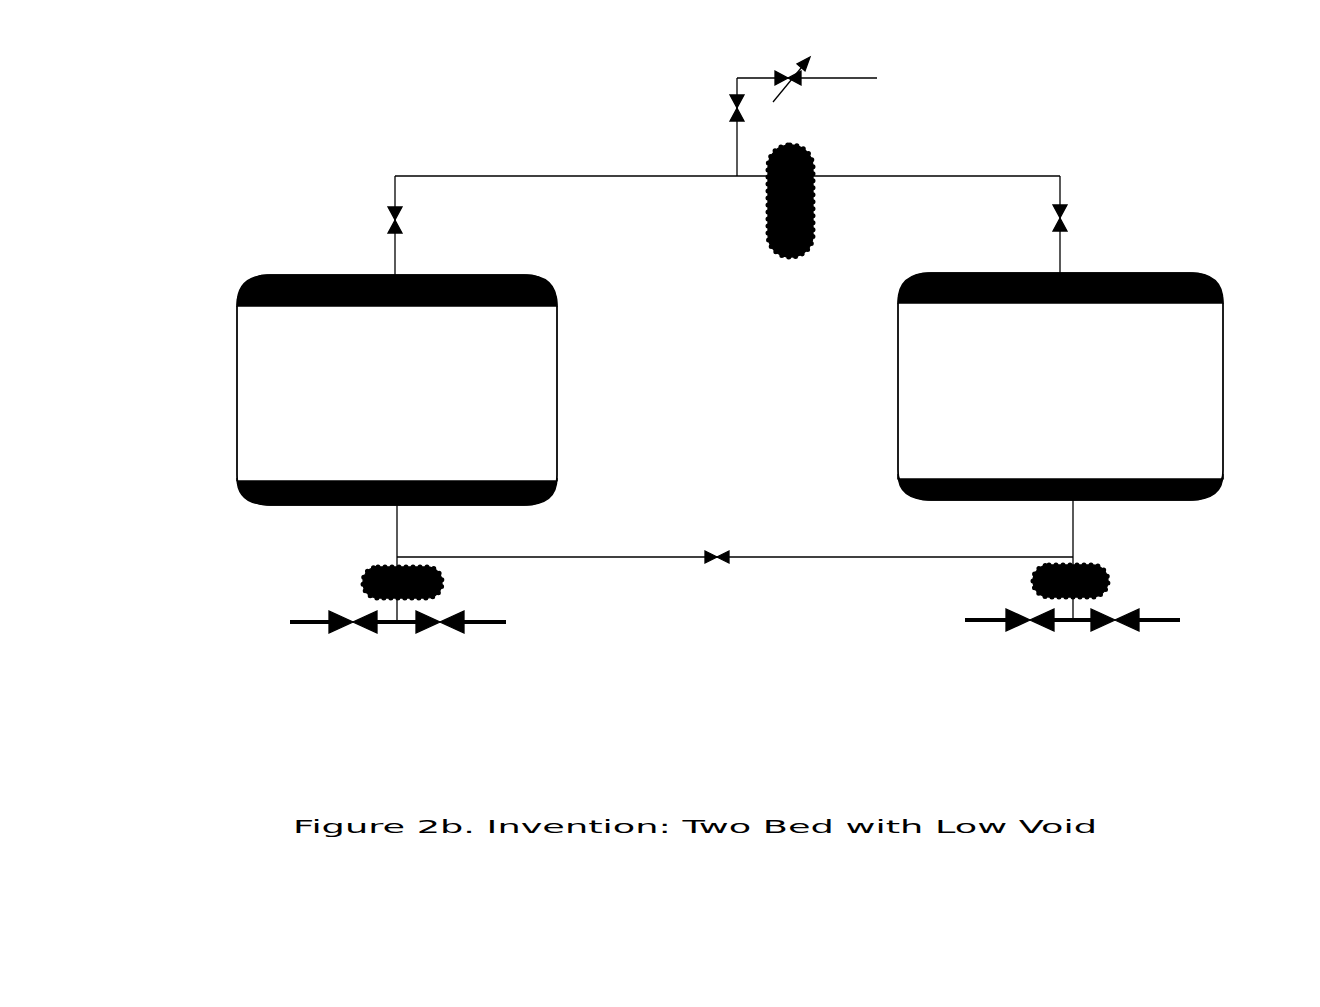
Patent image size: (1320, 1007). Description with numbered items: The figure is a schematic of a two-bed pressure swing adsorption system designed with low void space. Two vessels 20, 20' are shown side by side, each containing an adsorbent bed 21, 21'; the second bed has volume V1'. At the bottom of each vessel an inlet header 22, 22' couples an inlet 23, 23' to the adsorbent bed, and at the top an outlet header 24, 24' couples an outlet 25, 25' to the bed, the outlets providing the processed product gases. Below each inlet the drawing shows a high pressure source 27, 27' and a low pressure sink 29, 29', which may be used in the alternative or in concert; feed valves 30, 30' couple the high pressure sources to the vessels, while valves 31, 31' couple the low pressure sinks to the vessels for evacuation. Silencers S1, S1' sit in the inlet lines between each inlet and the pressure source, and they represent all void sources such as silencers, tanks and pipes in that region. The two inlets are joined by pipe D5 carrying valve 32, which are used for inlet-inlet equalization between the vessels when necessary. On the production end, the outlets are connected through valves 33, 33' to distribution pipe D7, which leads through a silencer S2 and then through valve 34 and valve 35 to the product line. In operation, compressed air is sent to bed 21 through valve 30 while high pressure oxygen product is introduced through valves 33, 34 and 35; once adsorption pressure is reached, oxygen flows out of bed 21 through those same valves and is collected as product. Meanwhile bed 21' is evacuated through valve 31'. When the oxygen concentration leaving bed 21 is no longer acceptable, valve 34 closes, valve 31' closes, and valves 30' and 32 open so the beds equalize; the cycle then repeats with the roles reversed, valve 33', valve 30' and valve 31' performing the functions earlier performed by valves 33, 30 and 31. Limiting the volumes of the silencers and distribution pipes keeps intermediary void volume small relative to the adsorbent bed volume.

The vessel 20 is at (1090, 386).
The vessel 20' is at (366, 390).
The adsorbent bed 21 is at (1000, 391).
The adsorbent bed 21' is at (579, 393).
The adsorbent bed volume V1' is at (205, 393).
The inlet header 22 is at (1036, 499).
The inlet header 22' is at (361, 502).
The inlet 23 is at (1092, 560).
The inlet 23' is at (419, 563).
The outlet header 24 is at (1083, 277).
The outlet header 24' is at (363, 270).
The outlet 25 is at (1095, 224).
The outlet 25' is at (435, 225).
The high pressure source 27 is at (906, 628).
The high pressure source 27' is at (233, 629).
The low pressure sink 29 is at (1227, 628).
The low pressure sink 29' is at (555, 629).
The valve 30 is at (1032, 604).
The valve 30' is at (358, 606).
The valve 31 is at (1128, 604).
The valve 31' is at (455, 606).
The valve 32 is at (710, 552).
The valve 33 is at (1032, 209).
The valve 33' is at (359, 211).
The valve 34 is at (732, 108).
The valve 35 is at (787, 70).
The silencer S1 is at (1109, 570).
The silencer S1' is at (362, 567).
The silencer S2 is at (800, 147).
The pipe D5 is at (872, 555).
The distribution pipe D7 is at (590, 176).